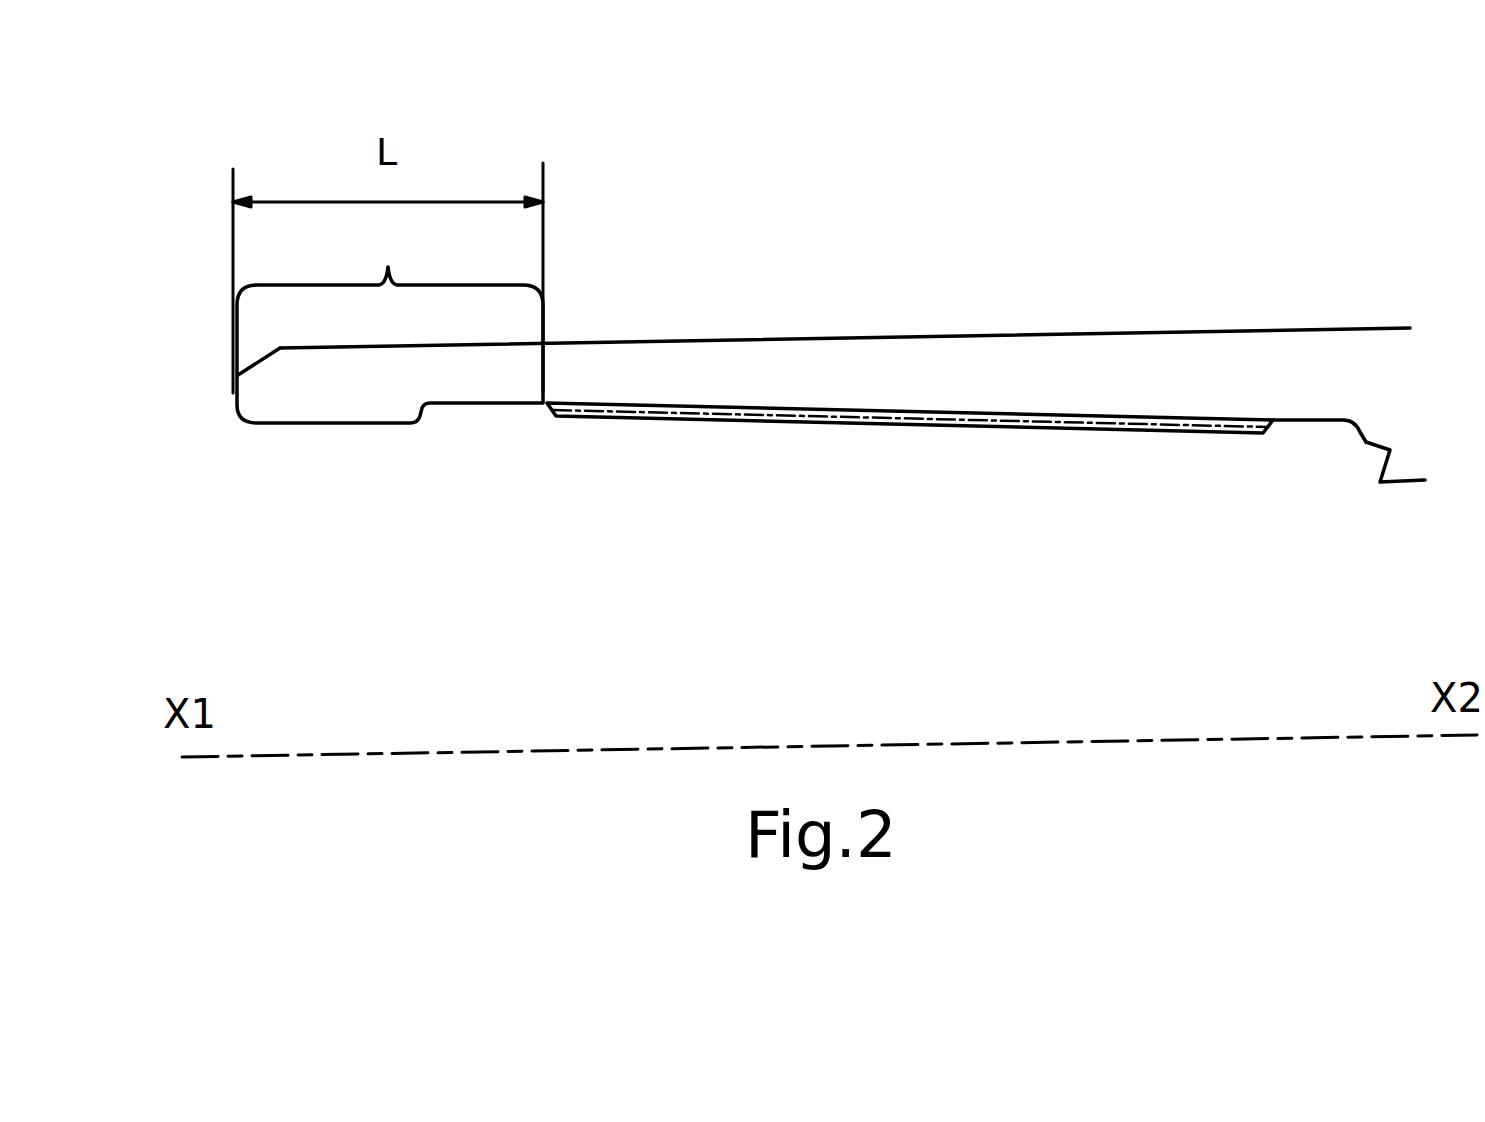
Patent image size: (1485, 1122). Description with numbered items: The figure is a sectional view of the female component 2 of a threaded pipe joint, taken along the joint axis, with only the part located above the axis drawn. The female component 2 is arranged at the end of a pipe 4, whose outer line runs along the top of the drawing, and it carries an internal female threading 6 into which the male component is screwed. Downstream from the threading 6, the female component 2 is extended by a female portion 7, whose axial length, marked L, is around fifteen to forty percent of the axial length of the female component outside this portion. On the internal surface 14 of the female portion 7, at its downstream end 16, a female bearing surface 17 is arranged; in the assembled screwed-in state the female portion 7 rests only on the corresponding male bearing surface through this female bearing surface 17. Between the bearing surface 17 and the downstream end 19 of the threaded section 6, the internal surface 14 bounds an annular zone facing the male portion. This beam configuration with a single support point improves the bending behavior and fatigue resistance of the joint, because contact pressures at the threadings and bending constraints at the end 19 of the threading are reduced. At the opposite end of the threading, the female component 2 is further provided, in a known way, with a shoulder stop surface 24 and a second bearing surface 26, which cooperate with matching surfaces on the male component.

The female component 2 is at (871, 282).
The pipe 4 is at (1367, 340).
The internal female threading 6 is at (885, 418).
The female portion 7 is at (390, 322).
The internal surface 14 is at (470, 504).
The downstream end 16 is at (233, 393).
The female bearing surface 17 is at (272, 423).
The downstream end of the threaded section 19 is at (548, 410).
The shoulder stop surface 24 is at (1377, 467).
The second bearing surface 26 is at (1367, 440).